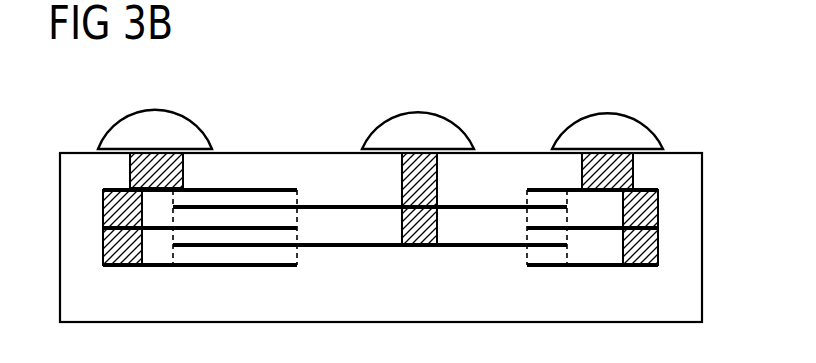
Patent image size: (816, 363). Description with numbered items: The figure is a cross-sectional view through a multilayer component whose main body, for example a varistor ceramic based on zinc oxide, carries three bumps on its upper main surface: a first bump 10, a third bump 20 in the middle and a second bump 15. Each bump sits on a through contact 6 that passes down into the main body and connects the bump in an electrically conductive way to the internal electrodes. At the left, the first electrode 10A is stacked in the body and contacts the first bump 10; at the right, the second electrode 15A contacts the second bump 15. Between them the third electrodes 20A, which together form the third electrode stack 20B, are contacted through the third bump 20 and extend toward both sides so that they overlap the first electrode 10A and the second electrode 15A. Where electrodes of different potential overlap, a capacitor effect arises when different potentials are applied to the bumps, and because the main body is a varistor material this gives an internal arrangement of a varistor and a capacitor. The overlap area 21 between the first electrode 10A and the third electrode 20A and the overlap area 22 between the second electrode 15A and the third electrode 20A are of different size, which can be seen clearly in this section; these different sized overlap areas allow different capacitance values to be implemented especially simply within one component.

The through contact 6 is at (634, 172).
The first bump 10 is at (157, 137).
The second bump 15 is at (607, 137).
The third bump 20 is at (418, 137).
The overlap area 21 is at (253, 200).
The overlap area 22 is at (543, 199).
The first electrode 10A is at (155, 191).
The second electrode 15A is at (606, 192).
The third electrode 20A is at (324, 211).
The third electrode stack 20B is at (380, 211).